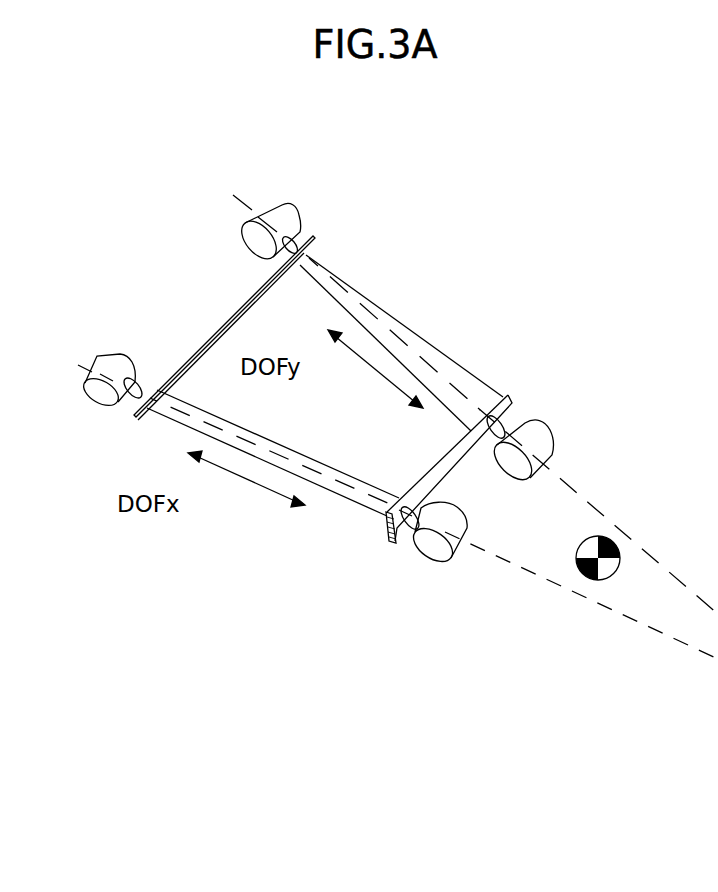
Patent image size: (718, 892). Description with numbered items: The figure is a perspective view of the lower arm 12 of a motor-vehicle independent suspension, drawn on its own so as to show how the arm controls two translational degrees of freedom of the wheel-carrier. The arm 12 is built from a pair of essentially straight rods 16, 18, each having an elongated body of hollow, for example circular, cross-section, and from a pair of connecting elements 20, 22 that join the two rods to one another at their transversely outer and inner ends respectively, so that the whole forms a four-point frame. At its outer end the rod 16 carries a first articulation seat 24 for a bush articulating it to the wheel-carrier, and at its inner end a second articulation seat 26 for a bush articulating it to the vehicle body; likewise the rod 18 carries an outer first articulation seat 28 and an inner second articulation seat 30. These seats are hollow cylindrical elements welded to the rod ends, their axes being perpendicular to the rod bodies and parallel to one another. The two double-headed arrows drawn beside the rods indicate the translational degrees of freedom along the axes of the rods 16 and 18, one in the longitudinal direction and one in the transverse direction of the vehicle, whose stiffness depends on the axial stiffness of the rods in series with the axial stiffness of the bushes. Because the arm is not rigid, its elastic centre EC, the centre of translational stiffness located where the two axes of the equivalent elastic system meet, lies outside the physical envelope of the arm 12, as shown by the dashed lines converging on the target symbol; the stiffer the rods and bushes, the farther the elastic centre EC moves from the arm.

The lower arm 12 is at (411, 292).
The rod 16 is at (350, 503).
The rod 18 is at (457, 376).
The connecting element 20 is at (462, 475).
The connecting element 22 is at (220, 318).
The first articulation seat 24 is at (434, 553).
The second articulation seat 26 is at (104, 354).
The first articulation seat 28 is at (541, 437).
The second articulation seat 30 is at (290, 210).
The elastic centre EC is at (610, 540).